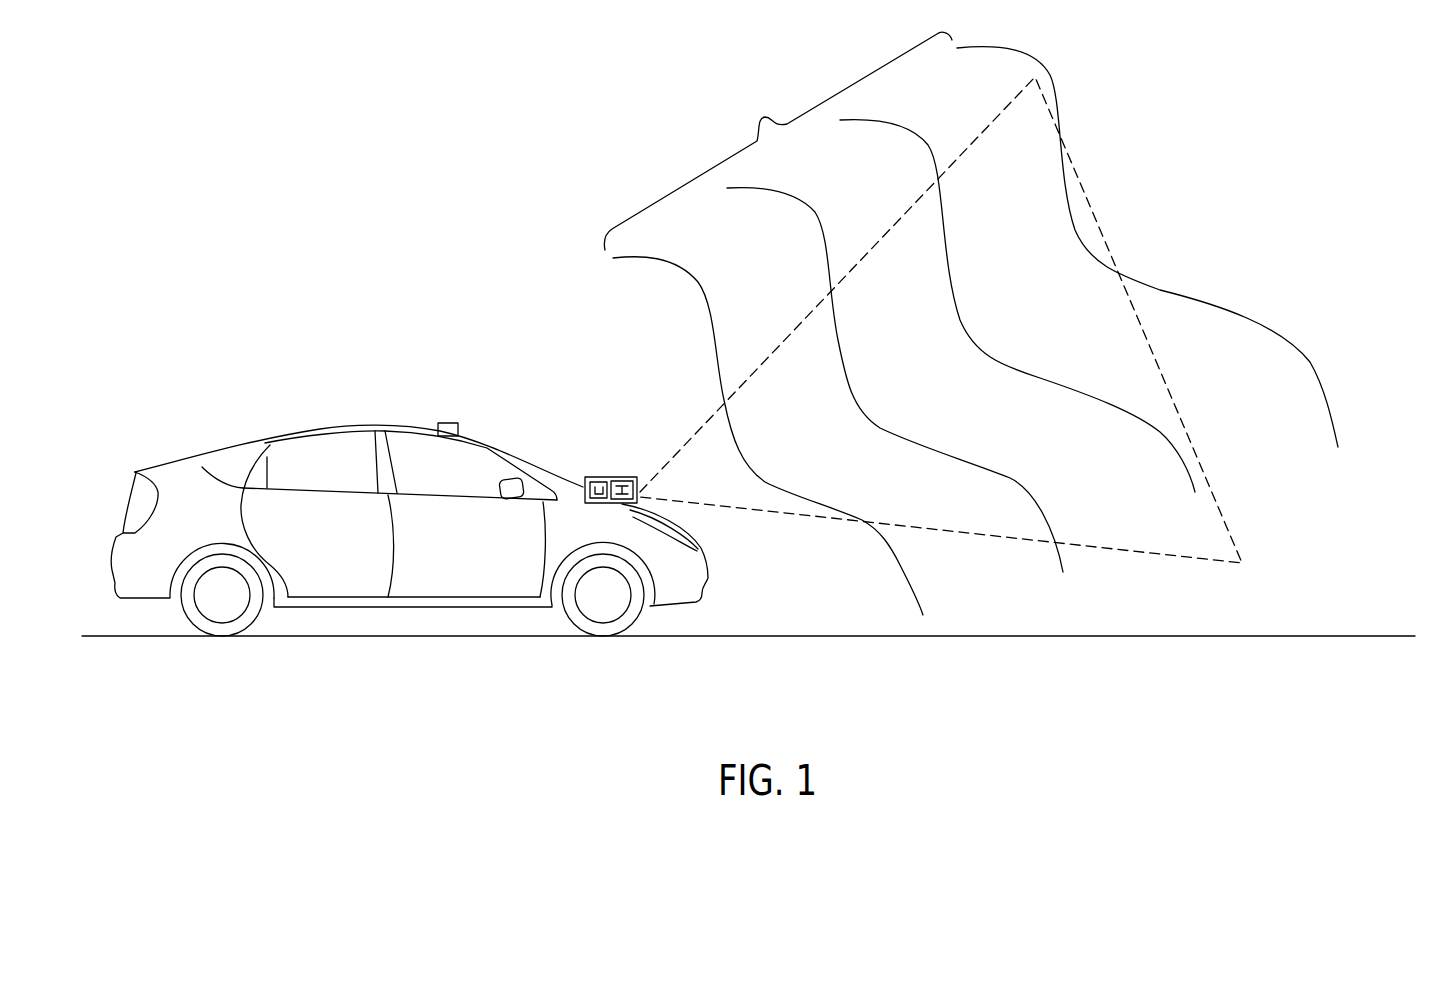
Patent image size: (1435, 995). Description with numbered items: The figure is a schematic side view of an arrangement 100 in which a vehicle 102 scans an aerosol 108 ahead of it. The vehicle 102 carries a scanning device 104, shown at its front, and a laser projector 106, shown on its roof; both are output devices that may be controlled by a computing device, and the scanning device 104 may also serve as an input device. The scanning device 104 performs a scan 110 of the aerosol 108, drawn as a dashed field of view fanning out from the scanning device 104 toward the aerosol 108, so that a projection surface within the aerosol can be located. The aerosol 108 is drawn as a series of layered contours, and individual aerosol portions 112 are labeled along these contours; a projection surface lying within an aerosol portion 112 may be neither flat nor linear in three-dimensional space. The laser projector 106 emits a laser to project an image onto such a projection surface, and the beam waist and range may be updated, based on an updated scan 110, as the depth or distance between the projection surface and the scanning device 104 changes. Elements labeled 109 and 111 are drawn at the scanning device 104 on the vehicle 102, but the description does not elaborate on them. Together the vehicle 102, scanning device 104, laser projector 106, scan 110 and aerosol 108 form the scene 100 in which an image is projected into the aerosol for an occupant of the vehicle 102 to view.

The vehicle sensing system 100 is at (278, 153).
The vehicle 102 is at (237, 442).
The scanning device 104 is at (601, 478).
The laser projector 106 is at (447, 423).
The aerosol 108 is at (971, 323).
The sensor element 109 is at (620, 478).
The scan 110 is at (802, 518).
The sensor element 111 is at (592, 482).
The aerosol portion 112 is at (884, 541).